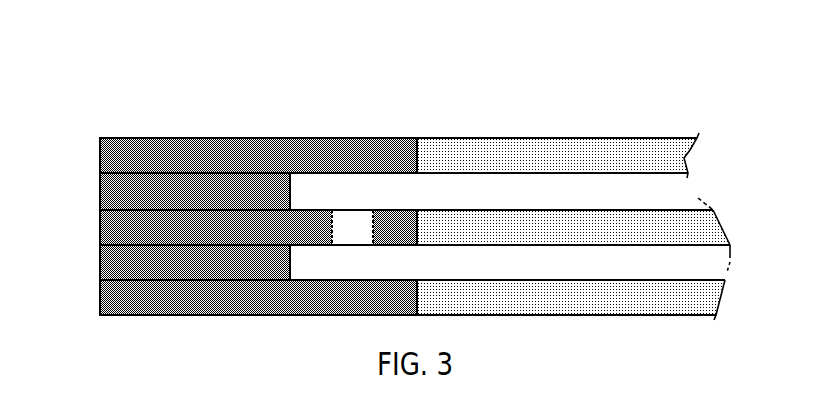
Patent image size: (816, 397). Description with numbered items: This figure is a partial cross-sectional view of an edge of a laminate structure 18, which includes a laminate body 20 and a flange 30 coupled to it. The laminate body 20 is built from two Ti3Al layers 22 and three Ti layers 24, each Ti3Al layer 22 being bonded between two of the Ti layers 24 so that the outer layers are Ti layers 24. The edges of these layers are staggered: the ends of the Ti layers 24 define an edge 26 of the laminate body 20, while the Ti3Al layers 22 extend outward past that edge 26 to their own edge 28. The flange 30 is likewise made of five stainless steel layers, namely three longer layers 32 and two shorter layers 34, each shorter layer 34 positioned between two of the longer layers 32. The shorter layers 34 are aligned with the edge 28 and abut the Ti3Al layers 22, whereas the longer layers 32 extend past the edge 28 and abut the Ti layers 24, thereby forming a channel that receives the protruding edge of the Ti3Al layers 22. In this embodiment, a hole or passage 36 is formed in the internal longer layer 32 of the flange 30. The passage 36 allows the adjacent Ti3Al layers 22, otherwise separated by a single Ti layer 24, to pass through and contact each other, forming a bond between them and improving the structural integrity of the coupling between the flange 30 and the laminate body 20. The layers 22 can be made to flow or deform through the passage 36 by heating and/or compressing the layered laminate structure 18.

The laminate structure 18 is at (236, 31).
The laminate body 20 is at (622, 101).
The Ti3Al layers 22 is at (692, 190).
The Ti layers 24 is at (685, 156).
The edge of laminate body 26 is at (420, 124).
The edge of Ti3Al layers 28 is at (284, 322).
The flange 30 is at (150, 103).
The longer flange layers 32 is at (98, 155).
The shorter flange layers 34 is at (98, 191).
The passage 36 is at (353, 225).